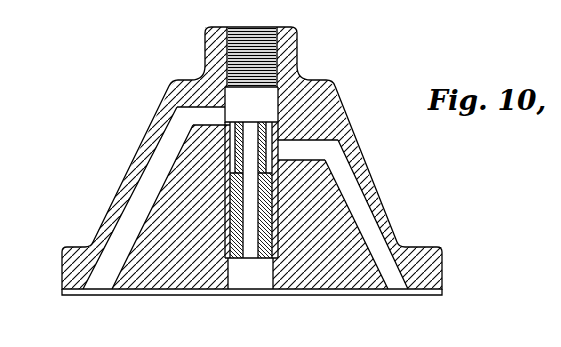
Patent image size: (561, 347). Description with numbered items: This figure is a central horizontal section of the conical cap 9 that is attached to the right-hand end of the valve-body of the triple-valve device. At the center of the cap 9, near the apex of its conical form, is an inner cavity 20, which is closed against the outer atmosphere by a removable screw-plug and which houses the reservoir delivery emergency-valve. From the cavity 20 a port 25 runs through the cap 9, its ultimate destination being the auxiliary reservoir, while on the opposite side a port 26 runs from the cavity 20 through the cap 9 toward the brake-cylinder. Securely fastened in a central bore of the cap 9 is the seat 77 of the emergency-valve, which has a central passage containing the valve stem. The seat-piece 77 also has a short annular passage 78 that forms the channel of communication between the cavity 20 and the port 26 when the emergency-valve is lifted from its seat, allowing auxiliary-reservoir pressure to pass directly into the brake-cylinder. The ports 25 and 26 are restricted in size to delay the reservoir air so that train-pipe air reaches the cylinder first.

The cap 9 is at (377, 188).
The inner cavity 20 is at (265, 100).
The port 25 is at (137, 213).
The port 26 is at (367, 233).
The seat 77 is at (233, 260).
The annular passage 78 is at (295, 120).